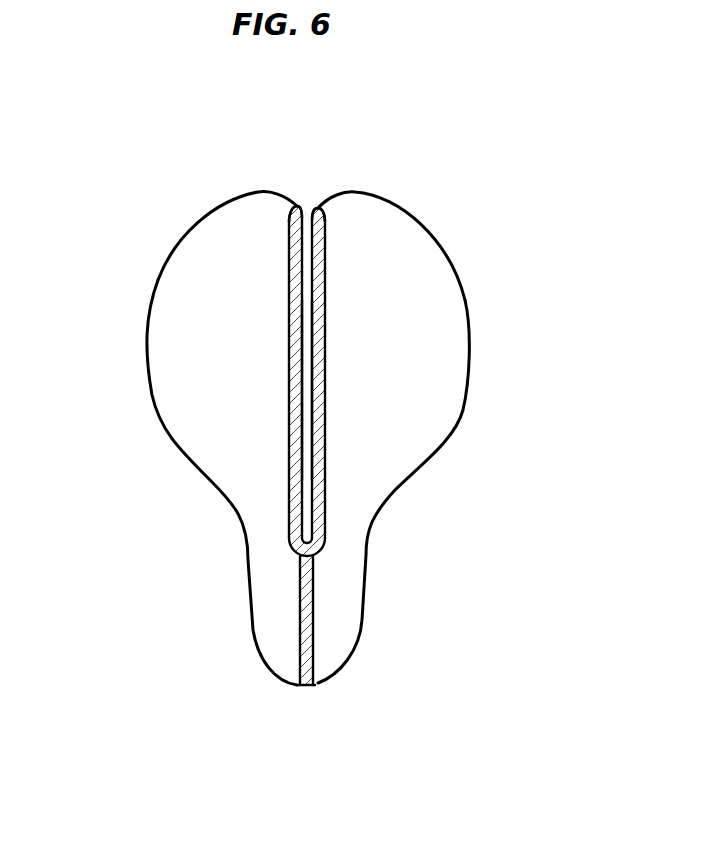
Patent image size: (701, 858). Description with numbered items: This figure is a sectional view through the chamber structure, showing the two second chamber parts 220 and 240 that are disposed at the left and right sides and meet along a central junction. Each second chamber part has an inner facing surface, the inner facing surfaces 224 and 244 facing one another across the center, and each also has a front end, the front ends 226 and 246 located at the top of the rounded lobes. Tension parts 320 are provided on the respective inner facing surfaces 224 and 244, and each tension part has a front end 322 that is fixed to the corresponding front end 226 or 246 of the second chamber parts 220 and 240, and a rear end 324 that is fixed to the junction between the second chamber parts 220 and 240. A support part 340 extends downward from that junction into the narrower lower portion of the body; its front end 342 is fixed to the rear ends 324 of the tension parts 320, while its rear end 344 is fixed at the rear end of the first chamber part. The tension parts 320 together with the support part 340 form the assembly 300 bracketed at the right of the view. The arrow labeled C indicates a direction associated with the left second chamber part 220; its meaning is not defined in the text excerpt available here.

The second chamber part 220 is at (163, 397).
The inner facing surface 224 is at (303, 328).
The front end 226 is at (263, 208).
The second chamber part 240 is at (468, 325).
The inner facing surface 244 is at (314, 320).
The front end 246 is at (355, 208).
The tension and support assembly 300 is at (527, 462).
The tension part 320 is at (318, 395).
The front end of tension part 322 is at (315, 205).
The rear end of tension part 324 is at (317, 527).
The support part 340 is at (309, 610).
The front end of support part 342 is at (322, 553).
The rear end of support part 344 is at (313, 673).
The cutting direction C is at (167, 492).